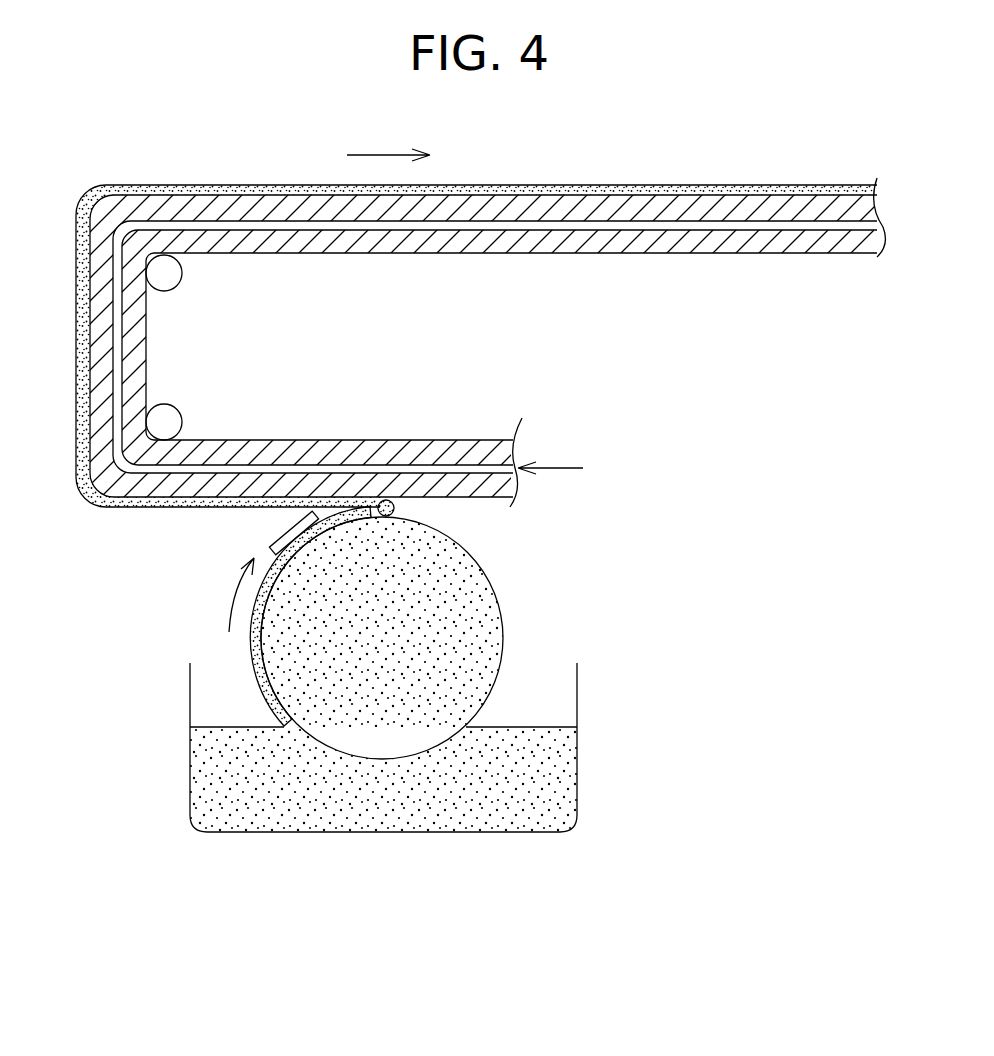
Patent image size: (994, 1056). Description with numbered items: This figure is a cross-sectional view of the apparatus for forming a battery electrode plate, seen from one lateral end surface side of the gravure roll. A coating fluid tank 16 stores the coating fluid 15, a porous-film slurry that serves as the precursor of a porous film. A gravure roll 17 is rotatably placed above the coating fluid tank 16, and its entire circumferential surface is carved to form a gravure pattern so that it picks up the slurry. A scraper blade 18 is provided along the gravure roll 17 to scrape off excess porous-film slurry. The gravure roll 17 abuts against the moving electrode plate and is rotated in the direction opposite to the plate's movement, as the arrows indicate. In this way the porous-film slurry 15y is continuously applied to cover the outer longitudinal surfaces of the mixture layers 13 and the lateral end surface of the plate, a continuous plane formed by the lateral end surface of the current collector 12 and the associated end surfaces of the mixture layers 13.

The current collector 12 is at (310, 225).
The mixture layer 13 is at (423, 446).
The coating fluid 15 is at (537, 777).
The porous-film slurry 15y is at (832, 188).
The coating fluid tank 16 is at (487, 833).
The gravure roll 17 is at (483, 620).
The scraper blade 18 is at (287, 535).